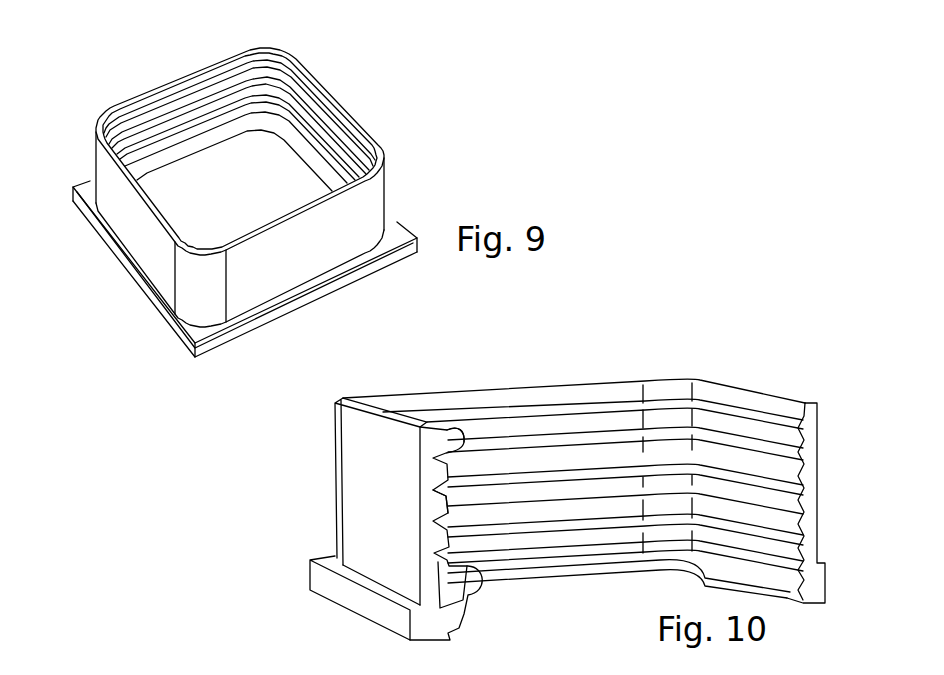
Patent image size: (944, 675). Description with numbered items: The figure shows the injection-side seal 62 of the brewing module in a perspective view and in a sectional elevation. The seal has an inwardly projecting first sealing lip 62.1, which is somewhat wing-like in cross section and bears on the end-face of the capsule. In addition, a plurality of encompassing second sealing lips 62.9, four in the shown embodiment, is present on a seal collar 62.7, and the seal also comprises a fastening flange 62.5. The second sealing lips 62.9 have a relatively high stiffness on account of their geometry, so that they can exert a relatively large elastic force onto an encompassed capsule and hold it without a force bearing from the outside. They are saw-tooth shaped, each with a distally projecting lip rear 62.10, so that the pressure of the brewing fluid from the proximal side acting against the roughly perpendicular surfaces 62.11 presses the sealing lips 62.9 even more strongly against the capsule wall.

In FIG. 9, the injection-side seal 62 is at (110, 270).
In FIG. 10, the injection-side seal 62 is at (580, 593).
In FIG. 9, the first sealing lip 62.1 is at (285, 137).
In FIG. 10, the first sealing lip 62.1 is at (733, 537).
In FIG. 9, the fastening flange 62.5 is at (402, 242).
In FIG. 10, the fastening flange 62.5 is at (330, 557).
In FIG. 9, the seal collar 62.7 is at (393, 157).
In FIG. 10, the seal collar 62.7 is at (807, 443).
In FIG. 9, the second sealing lips 62.9 is at (200, 97).
In FIG. 10, the second sealing lips 62.9 is at (753, 507).
In FIG. 10, the lip rear 62.10 is at (440, 460).
In FIG. 10, the roughly perpendicular surfaces 62.11 is at (440, 518).